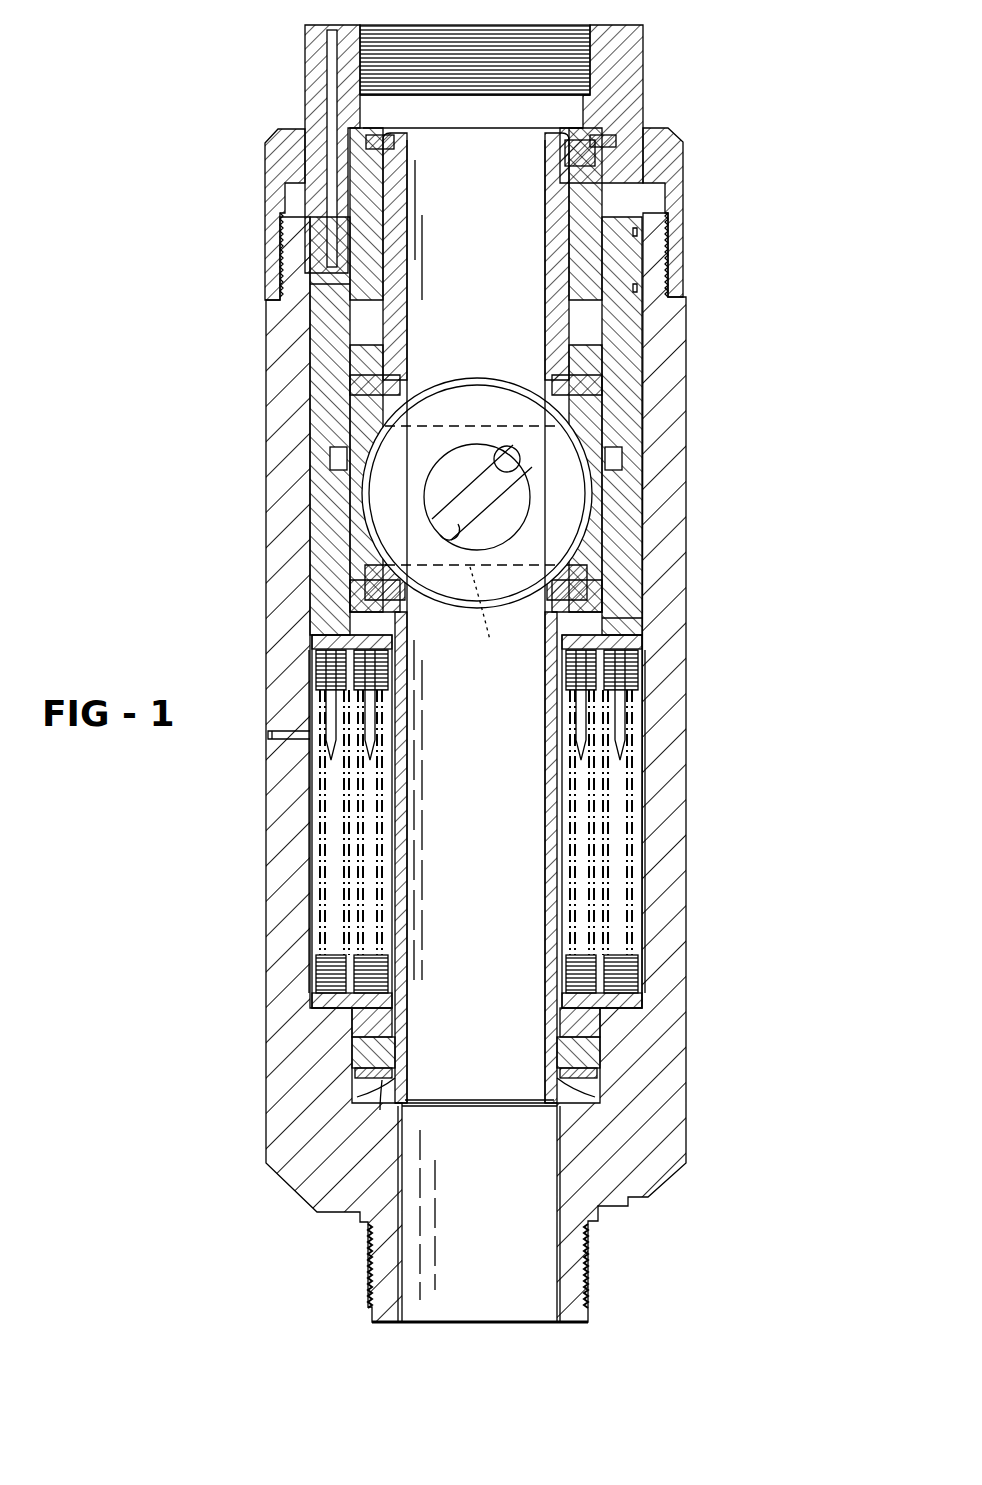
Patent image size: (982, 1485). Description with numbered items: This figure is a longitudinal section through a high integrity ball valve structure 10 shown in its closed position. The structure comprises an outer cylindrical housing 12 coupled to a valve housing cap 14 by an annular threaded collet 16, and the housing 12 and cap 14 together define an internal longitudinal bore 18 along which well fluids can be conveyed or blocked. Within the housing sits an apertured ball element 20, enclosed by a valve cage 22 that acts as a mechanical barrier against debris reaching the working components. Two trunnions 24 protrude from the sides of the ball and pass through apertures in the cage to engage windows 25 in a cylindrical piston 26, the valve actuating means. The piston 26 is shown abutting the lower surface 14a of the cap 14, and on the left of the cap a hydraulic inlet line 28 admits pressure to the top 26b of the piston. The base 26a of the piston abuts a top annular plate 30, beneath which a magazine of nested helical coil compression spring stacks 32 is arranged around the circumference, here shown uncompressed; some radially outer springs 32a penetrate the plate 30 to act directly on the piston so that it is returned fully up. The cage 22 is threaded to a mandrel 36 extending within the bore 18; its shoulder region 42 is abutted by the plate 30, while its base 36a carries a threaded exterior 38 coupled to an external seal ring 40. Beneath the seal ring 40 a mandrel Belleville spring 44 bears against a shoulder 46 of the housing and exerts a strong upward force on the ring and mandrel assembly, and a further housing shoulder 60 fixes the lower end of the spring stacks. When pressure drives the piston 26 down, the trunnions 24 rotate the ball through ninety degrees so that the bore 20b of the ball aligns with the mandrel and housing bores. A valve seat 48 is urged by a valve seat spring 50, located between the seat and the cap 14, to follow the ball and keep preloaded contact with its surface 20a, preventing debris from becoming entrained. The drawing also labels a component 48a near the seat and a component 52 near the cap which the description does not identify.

The ball valve structure 10 is at (695, 432).
The outer cylindrical housing 12 is at (672, 705).
The valve housing cap 14 is at (636, 44).
The lower surface of annular cap 14a is at (628, 258).
The annular threaded collet 16 is at (668, 152).
The internal longitudinal bore 18 is at (517, 249).
The apertured ball element 20 is at (590, 478).
The surface of ball element 20a is at (448, 380).
The bore of ball element 20b is at (476, 857).
The valve cage 22 is at (582, 497).
The trunnions 24 is at (338, 458).
The windows 25 is at (340, 470).
The cylindrical piston 26 is at (626, 330).
The base of piston 26a is at (625, 630).
The top of piston 26b is at (334, 284).
The hydraulic inlet line 28 is at (322, 191).
The top annular plate 30 is at (320, 608).
The helical coil compression spring stacks 32 is at (638, 955).
The radially outer helical coil springs 32a is at (630, 965).
The mandrel 36 is at (555, 782).
The base of mandrel 36a is at (352, 1032).
The threaded exterior 38 is at (600, 1045).
The external seal ring 40 is at (600, 1062).
The shoulder region of mandrel 42 is at (600, 555).
The mandrel Belleville spring 44 is at (373, 1080).
The housing shoulder 46 is at (597, 1095).
The valve seat 48 is at (374, 348).
The upper seal 48a is at (560, 170).
The valve seat spring 50 is at (640, 128).
The seal 52 is at (385, 130).
The valve housing shoulder 60 is at (620, 1020).